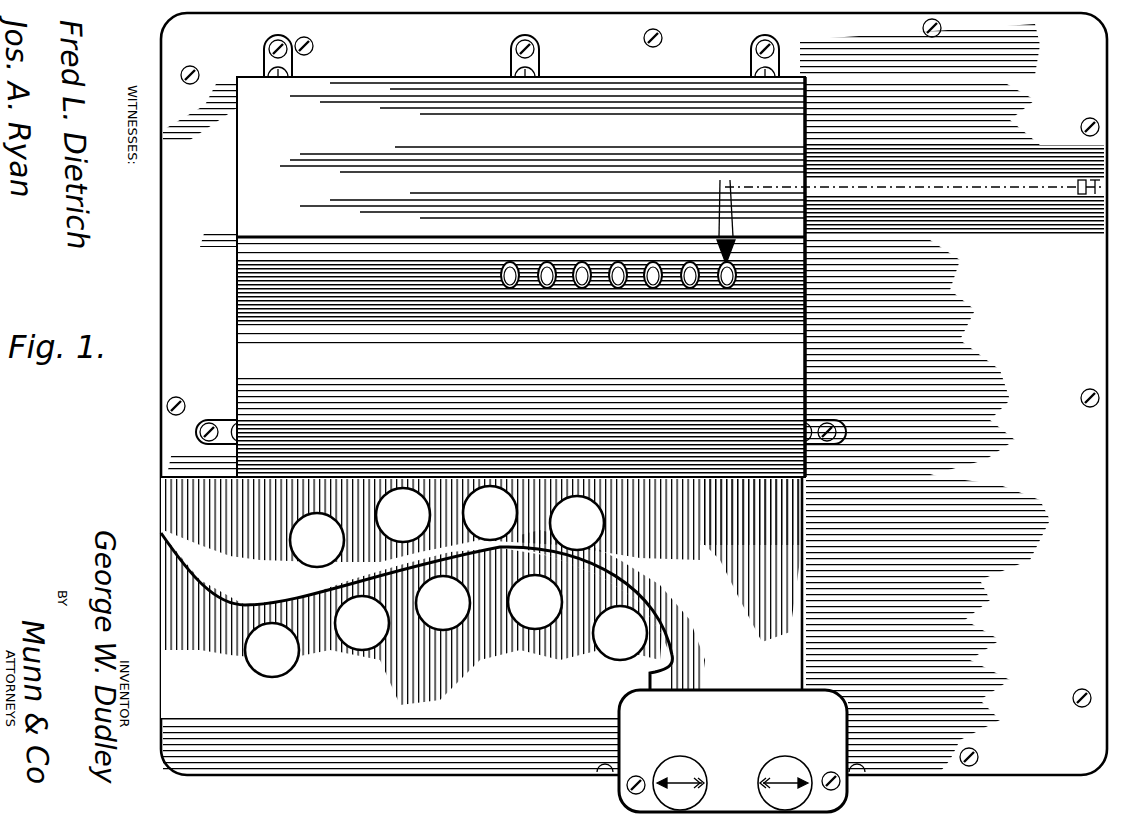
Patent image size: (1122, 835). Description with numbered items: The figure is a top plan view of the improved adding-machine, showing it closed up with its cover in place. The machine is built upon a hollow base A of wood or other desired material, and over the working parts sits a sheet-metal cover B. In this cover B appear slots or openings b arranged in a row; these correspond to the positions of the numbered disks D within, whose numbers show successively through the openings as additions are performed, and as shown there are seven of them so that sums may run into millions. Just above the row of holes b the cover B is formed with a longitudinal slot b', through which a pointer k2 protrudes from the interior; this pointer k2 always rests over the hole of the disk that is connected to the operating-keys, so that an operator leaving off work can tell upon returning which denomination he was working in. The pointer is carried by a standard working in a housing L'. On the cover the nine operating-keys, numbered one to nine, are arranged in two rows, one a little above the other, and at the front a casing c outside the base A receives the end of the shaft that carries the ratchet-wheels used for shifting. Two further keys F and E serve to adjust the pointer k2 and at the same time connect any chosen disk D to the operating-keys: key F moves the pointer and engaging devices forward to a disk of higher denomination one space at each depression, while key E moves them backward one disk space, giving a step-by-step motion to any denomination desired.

The hollow base A is at (634, 394).
The cover B is at (521, 277).
The housing L' is at (913, 176).
The pointer k2 is at (720, 248).
The longitudinal slot b' is at (758, 249).
The slots or openings b is at (630, 266).
The numbered disks D is at (547, 289).
The casing c is at (377, 513).
The shifting key E is at (790, 746).
The shifting key F is at (680, 748).